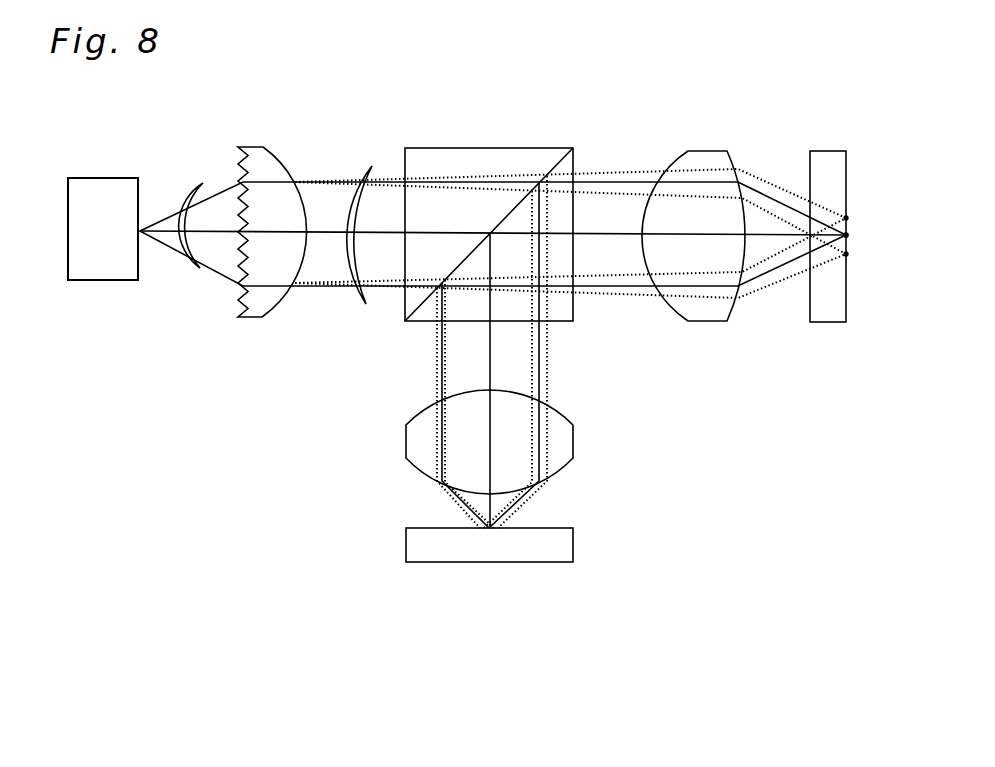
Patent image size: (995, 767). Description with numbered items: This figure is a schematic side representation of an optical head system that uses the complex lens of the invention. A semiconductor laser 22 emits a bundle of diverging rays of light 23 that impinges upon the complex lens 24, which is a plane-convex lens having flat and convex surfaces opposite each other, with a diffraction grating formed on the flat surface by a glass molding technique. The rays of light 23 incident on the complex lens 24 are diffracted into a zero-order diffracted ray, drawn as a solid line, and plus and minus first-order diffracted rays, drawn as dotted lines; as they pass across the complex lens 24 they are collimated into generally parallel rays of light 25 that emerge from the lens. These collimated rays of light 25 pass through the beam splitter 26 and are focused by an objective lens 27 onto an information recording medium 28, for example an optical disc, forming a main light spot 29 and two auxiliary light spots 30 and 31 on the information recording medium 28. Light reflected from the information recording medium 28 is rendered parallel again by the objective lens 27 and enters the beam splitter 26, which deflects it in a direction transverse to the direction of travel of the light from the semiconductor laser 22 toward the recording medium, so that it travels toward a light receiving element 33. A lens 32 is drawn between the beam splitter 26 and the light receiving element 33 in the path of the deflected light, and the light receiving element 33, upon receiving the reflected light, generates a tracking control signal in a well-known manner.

The semiconductor laser 22 is at (95, 257).
The bundle of diverging rays of light 23 is at (180, 262).
The complex lens 24 is at (265, 293).
The collimated rays of light 25 is at (370, 296).
The beam splitter 26 is at (497, 163).
The objective lens 27 is at (702, 160).
The information recording medium 28 is at (828, 162).
The main light spot 29 is at (847, 235).
The auxiliary light spot 30 is at (846, 257).
The auxiliary light spot 31 is at (847, 218).
The condenser lens 32 is at (560, 443).
The light receiving element 33 is at (557, 555).